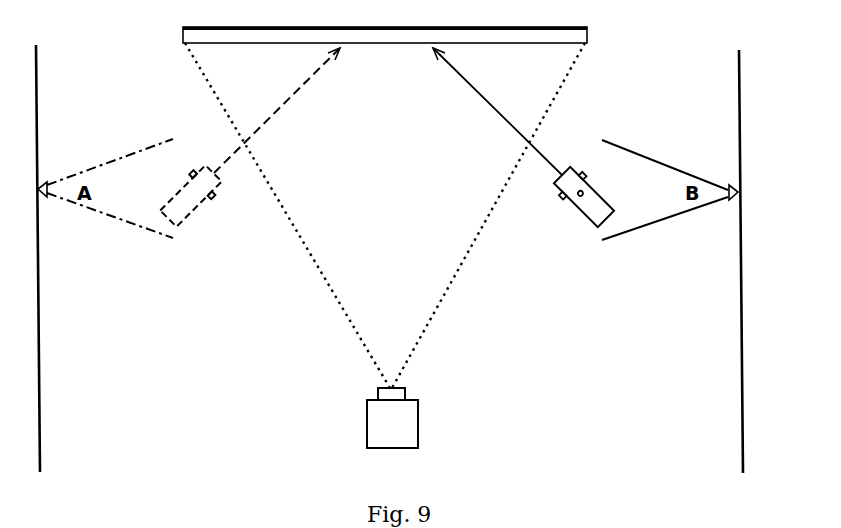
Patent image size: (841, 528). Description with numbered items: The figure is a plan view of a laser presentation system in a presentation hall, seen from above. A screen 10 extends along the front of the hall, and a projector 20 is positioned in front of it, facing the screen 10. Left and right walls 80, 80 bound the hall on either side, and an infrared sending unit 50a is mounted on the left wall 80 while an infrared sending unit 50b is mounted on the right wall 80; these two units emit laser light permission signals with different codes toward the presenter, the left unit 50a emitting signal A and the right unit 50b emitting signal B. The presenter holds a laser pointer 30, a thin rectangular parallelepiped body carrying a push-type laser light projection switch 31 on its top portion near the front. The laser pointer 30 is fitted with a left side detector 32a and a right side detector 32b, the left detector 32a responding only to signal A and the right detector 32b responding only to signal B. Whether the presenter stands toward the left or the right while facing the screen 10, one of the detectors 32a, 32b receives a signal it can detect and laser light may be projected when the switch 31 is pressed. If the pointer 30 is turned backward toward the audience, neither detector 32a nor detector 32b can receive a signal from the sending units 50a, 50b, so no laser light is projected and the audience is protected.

The screen 10 is at (378, 43).
The projector 20 is at (367, 427).
The laser pointer 30 is at (597, 226).
The laser light projection switch 31 is at (580, 197).
The left side detector 32a is at (561, 198).
The right side detector 32b is at (582, 175).
The left side infrared sending unit 50a is at (41, 182).
The right side infrared sending unit 50b is at (732, 190).
The wall 80 is at (39, 313).